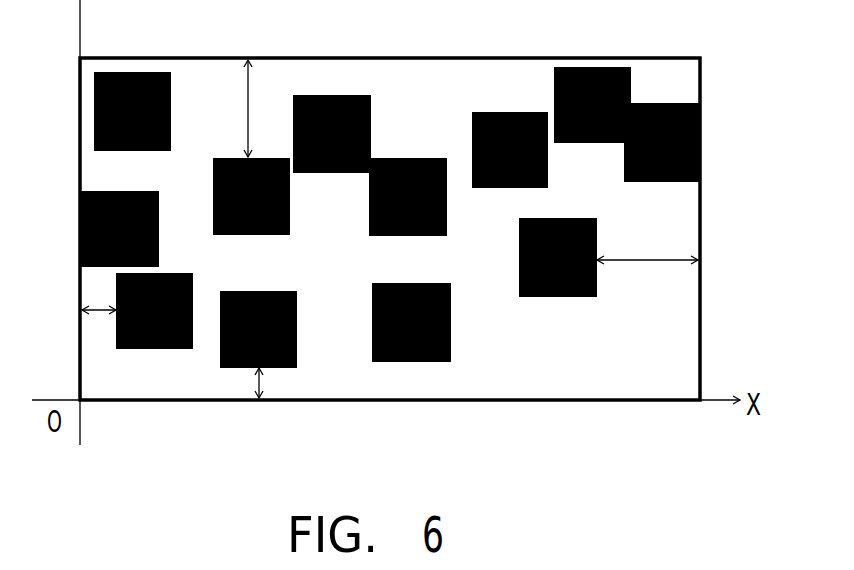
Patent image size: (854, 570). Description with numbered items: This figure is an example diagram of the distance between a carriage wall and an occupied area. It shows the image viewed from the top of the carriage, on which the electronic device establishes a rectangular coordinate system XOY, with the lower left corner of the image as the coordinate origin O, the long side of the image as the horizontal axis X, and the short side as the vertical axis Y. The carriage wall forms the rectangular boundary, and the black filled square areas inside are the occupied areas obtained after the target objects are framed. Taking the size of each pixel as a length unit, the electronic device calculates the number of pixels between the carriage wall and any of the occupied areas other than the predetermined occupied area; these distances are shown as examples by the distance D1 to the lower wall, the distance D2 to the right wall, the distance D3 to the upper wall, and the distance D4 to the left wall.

The distance between carriage wall and occupied area D1 is at (275, 382).
The distance between carriage wall and occupied area D2 is at (647, 240).
The distance between carriage wall and occupied area D3 is at (234, 108).
The distance between carriage wall and occupied area D4 is at (99, 329).